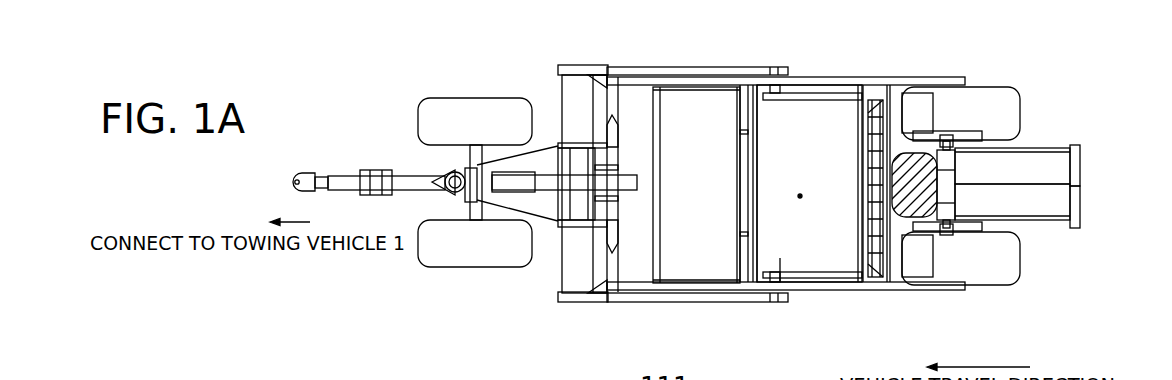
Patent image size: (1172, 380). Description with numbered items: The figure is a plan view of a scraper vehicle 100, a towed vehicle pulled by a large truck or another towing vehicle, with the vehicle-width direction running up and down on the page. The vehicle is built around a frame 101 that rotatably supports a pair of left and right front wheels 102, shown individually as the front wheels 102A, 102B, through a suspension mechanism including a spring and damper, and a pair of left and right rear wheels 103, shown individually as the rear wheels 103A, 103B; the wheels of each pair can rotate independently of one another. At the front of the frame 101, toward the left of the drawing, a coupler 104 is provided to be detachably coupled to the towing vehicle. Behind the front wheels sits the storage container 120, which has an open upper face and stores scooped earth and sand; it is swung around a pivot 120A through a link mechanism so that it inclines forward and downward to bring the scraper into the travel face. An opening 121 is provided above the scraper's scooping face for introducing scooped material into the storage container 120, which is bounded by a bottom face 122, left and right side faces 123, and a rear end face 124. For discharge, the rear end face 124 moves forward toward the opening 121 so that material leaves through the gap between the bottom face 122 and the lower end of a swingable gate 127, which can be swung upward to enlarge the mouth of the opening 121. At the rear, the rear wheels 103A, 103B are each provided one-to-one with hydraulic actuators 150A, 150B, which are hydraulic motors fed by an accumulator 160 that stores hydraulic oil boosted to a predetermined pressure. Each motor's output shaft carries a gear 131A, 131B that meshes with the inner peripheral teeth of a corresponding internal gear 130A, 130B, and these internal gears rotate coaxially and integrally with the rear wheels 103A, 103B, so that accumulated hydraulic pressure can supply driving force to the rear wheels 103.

The scraper vehicle 100 is at (416, 65).
The frame 101 is at (575, 113).
The front wheels 102 is at (385, 102).
The front wheel 102A is at (411, 135).
The front wheel 102B is at (421, 265).
The rear wheels 103 is at (1054, 85).
The rear wheel 103A is at (1029, 115).
The rear wheel 103B is at (1031, 281).
The coupler 104 is at (297, 163).
The storage container 120 is at (798, 136).
The pivot 120A is at (780, 112).
The opening 121 is at (758, 243).
The bottom face 122 is at (800, 196).
The side faces 123 is at (838, 92).
The rear end face 124 is at (855, 214).
The gate 127 is at (648, 254).
The internal gear 130A is at (973, 132).
The internal gear 130B is at (972, 235).
The gear 131A is at (946, 136).
The gear 131B is at (948, 236).
The hydraulic actuator 150A is at (953, 158).
The hydraulic actuator 150B is at (953, 213).
The accumulator 160 is at (898, 153).